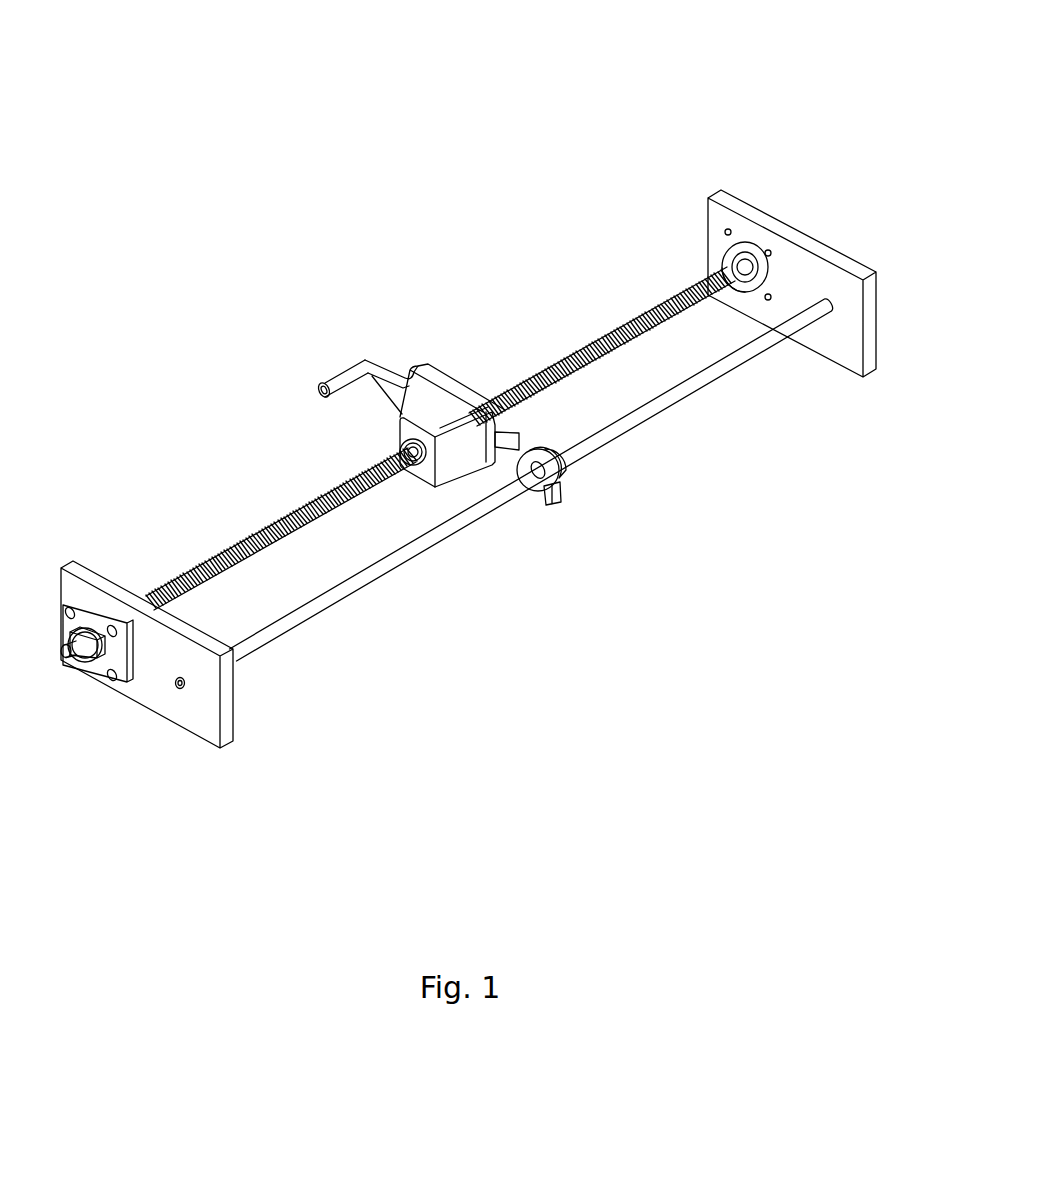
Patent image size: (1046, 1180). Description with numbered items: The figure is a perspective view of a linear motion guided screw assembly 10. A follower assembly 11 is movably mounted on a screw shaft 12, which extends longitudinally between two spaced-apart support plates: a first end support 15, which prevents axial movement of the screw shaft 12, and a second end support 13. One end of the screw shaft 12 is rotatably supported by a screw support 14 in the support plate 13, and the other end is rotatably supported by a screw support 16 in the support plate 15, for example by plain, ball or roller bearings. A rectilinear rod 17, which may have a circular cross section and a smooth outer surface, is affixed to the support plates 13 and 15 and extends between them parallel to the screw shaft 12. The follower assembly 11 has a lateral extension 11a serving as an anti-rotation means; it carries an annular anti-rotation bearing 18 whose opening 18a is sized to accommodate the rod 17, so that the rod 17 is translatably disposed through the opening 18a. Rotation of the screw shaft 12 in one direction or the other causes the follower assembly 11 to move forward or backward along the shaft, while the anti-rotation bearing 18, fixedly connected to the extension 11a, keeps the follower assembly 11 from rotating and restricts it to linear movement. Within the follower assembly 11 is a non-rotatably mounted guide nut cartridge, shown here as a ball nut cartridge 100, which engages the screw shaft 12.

The linear motion guided screw assembly 10 is at (477, 451).
The follower assembly 11 is at (572, 352).
The lateral extension 11a is at (565, 445).
The screw shaft 12 is at (271, 521).
The second end support 13 is at (120, 584).
The screw support 14 is at (88, 668).
The first end support 15 is at (784, 216).
The screw support 16 is at (725, 243).
The rectilinear rod 17 is at (400, 570).
The annular anti-rotation bearing 18 is at (652, 566).
The opening 18a is at (545, 497).
The ball nut cartridge 100 is at (400, 437).